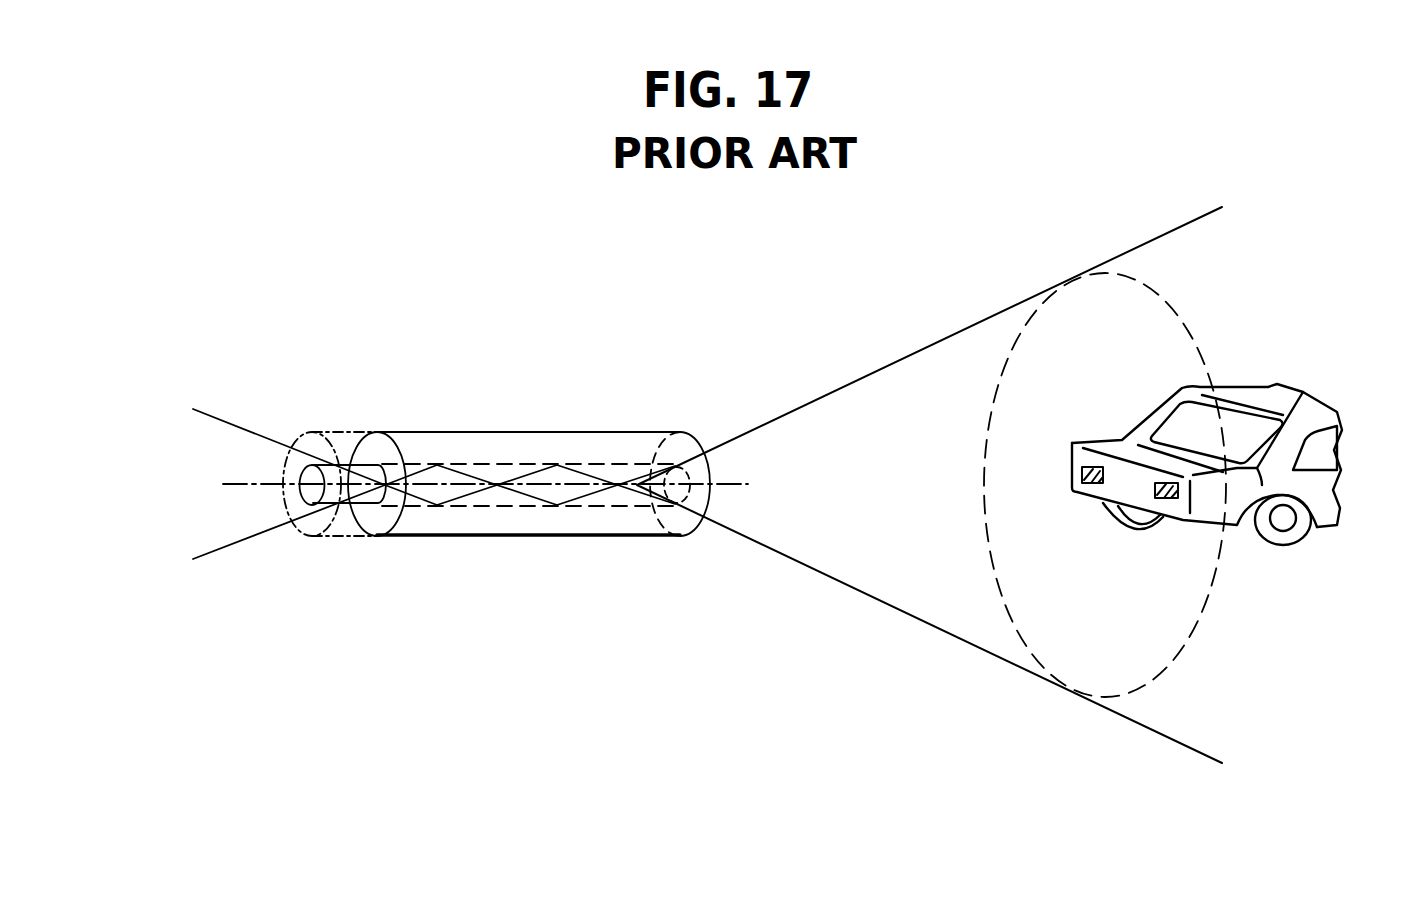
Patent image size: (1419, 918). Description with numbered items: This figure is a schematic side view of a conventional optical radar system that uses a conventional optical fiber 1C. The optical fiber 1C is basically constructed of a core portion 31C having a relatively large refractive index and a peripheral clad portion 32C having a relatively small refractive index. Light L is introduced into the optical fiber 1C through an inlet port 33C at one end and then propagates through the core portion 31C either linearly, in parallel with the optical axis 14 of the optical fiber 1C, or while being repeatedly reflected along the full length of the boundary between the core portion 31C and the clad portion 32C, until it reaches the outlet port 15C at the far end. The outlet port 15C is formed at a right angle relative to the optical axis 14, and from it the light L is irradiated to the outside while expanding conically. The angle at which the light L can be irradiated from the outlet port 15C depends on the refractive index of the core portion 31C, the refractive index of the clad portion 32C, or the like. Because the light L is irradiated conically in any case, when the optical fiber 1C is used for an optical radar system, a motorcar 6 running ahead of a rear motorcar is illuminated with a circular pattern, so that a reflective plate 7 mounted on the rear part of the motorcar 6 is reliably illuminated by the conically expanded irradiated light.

The optical axis 14 is at (245, 482).
The inlet port 33C is at (313, 525).
The core portion 31C is at (370, 468).
The clad portion 32C is at (367, 448).
The optical fiber 1C is at (533, 445).
The outlet port 15C is at (710, 500).
The light L is at (577, 473).
The motorcar 6 is at (1253, 387).
The reflective plate 7 is at (1160, 499).